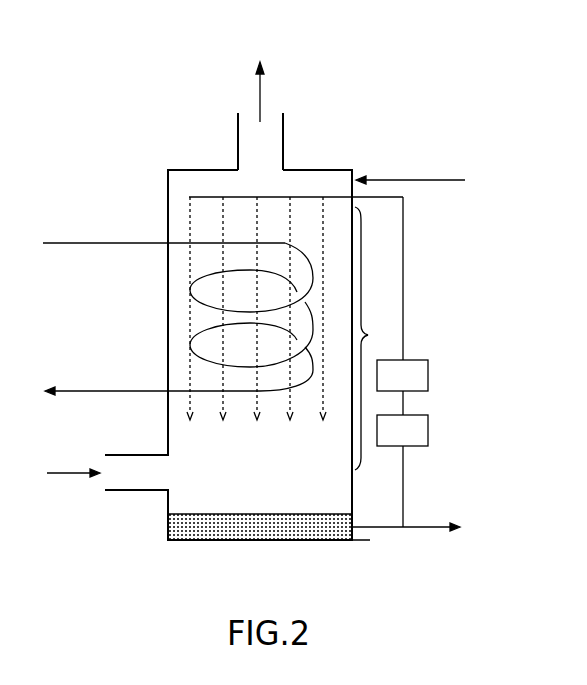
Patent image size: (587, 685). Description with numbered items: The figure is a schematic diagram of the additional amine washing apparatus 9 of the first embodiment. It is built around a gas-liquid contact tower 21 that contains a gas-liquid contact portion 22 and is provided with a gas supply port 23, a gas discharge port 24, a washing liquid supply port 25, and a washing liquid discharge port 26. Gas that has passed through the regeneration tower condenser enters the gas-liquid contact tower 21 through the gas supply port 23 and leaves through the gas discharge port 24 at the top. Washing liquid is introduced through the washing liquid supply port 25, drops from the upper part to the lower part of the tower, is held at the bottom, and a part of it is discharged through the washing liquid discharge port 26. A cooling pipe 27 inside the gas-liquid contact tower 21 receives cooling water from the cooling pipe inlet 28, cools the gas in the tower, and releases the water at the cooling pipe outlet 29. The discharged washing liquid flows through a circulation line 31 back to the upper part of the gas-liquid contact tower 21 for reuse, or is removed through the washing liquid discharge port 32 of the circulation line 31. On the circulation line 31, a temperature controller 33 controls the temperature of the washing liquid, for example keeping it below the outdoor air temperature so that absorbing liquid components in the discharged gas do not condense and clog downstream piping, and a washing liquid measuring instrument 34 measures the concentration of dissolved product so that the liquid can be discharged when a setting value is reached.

The additional amine washing apparatus 9 is at (268, 38).
The gas-liquid contact tower 21 is at (253, 498).
The gas-liquid contact portion 22 is at (379, 333).
The gas supply port 23 is at (126, 492).
The gas discharge port 24 is at (284, 127).
The washing liquid supply port 25 is at (415, 180).
The washing liquid discharge port 26 is at (360, 528).
The cooling pipe 27 is at (202, 243).
The cooling pipe inlet 28 is at (70, 245).
The cooling pipe outlet 29 is at (70, 393).
The circulation line 31 is at (405, 482).
The washing liquid discharge port 32 is at (433, 530).
The temperature controller 33 is at (430, 425).
The washing liquid measuring instrument 34 is at (430, 375).